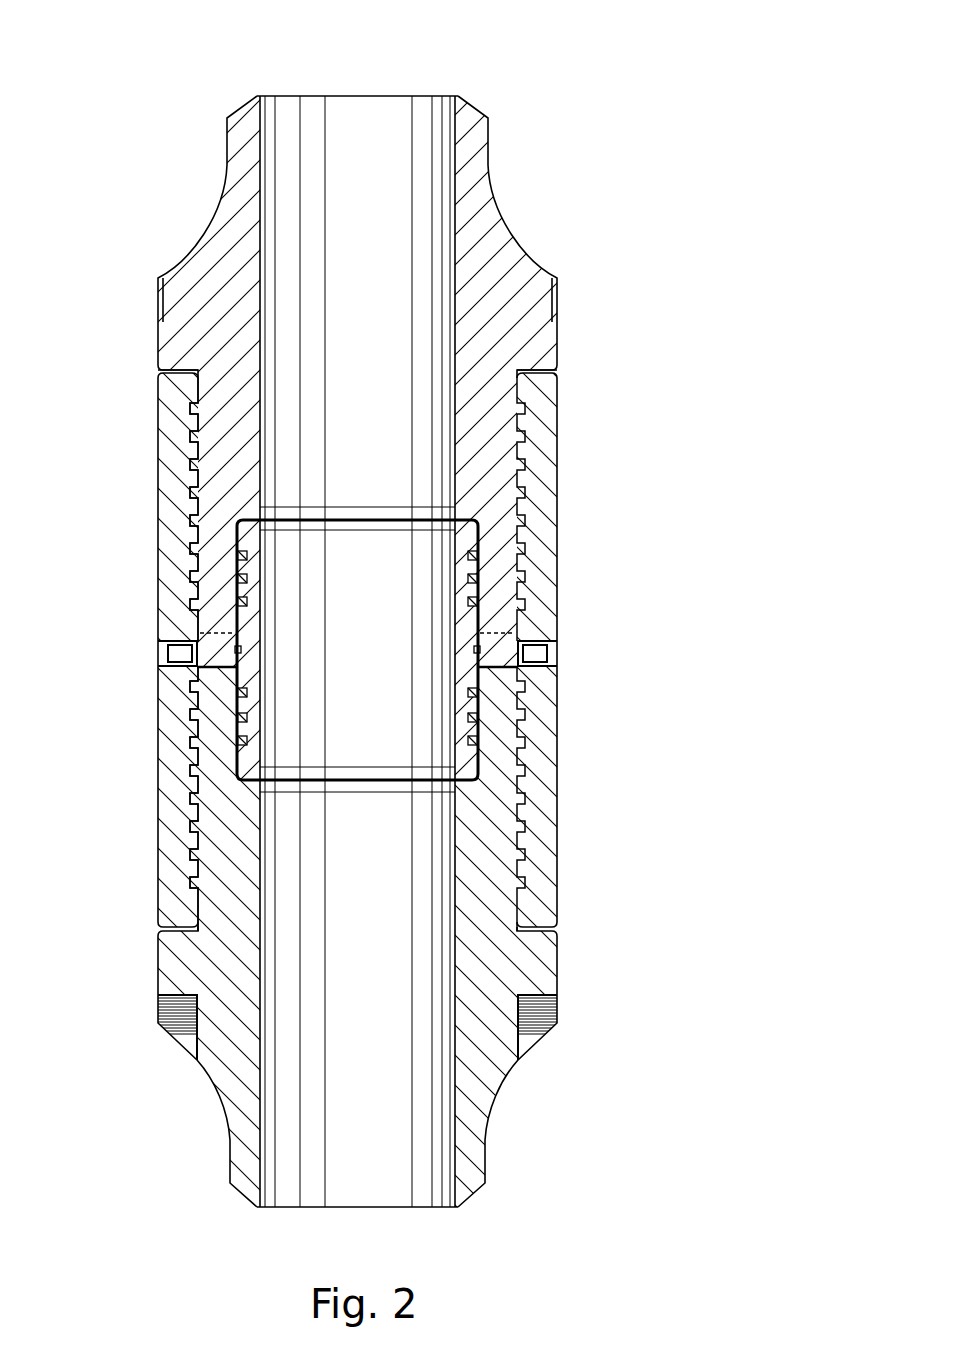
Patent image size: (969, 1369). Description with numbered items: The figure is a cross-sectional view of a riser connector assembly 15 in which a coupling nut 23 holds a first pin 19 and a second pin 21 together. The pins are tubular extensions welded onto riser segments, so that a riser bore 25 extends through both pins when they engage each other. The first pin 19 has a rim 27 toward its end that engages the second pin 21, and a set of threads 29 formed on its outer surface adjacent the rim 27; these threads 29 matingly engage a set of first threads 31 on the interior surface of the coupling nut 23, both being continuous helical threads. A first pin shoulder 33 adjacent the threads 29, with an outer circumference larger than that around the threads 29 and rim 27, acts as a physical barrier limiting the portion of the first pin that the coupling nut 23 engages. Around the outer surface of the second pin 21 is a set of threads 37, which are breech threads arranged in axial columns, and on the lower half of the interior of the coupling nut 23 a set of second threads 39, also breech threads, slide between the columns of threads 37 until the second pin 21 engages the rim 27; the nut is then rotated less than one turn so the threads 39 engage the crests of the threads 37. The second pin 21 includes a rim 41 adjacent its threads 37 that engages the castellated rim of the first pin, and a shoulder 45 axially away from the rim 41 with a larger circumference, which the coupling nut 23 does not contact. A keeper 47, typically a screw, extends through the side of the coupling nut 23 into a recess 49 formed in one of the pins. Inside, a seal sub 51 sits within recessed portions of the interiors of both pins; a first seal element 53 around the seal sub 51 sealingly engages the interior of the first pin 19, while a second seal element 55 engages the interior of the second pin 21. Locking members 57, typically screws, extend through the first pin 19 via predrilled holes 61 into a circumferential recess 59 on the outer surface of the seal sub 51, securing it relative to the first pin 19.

The connector assembly 15 is at (484, 650).
The first pin 19 is at (503, 258).
The second pin 21 is at (484, 650).
The coupling nut 23 is at (484, 650).
The riser bore 25 is at (455, 163).
The rim 27 is at (222, 655).
The threads 29 is at (192, 467).
The first threads 31 is at (197, 480).
The first pin shoulder 33 is at (190, 368).
The threads 37 is at (200, 835).
The second threads 39 is at (198, 848).
The rim 41 is at (158, 641).
The shoulder 45 is at (195, 932).
The keeper 47 is at (177, 653).
The recess 49 is at (233, 633).
The seal sub 51 is at (484, 650).
The first seal element 53 is at (483, 583).
The second seal element 55 is at (483, 742).
The locking member 57 is at (523, 700).
The circumferential recess 59 is at (480, 782).
The predrilled holes 61 is at (523, 643).